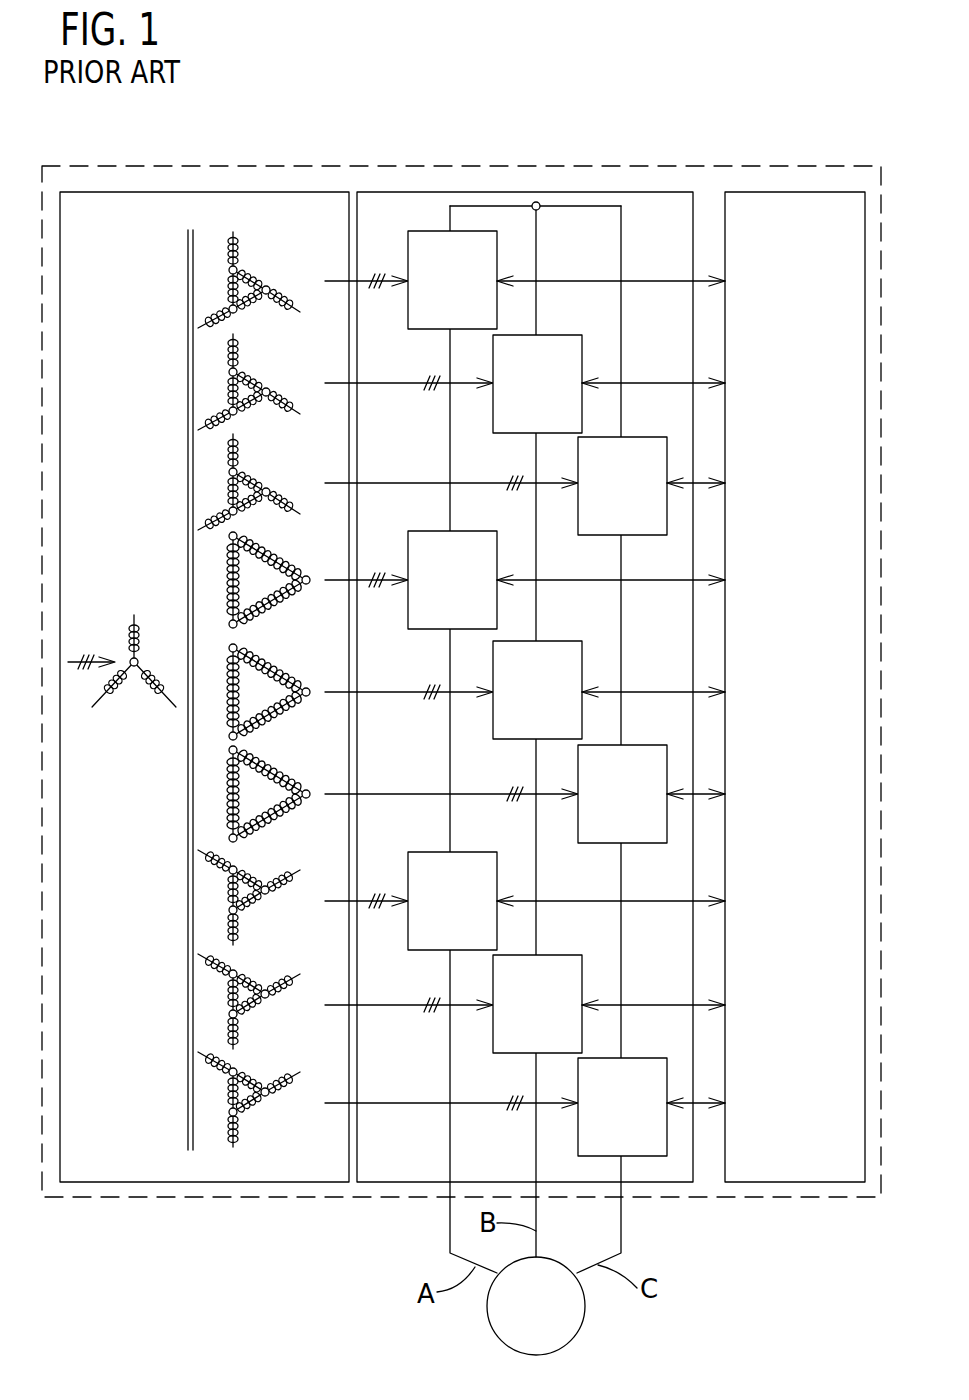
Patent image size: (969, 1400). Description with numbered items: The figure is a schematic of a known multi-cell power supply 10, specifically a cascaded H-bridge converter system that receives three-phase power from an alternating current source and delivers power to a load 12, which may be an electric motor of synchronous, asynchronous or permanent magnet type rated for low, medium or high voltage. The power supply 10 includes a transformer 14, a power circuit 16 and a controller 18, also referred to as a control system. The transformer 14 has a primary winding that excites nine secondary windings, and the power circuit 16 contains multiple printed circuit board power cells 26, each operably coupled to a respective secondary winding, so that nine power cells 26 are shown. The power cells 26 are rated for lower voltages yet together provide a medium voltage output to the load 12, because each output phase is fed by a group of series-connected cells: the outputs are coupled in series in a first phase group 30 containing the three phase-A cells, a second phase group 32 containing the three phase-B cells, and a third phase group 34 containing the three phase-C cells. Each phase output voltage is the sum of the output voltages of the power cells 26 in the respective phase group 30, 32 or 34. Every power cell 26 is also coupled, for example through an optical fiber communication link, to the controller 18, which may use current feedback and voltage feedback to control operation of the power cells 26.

The multi-cell power supply 10 is at (200, 1197).
The load 12 is at (583, 1322).
The transformer 14 is at (203, 192).
The power circuit 16 is at (591, 192).
The controller 18 is at (788, 192).
The power cell 26 is at (422, 231).
The first phase group 30 is at (456, 140).
The second phase group 32 is at (534, 140).
The third phase group 34 is at (675, 140).